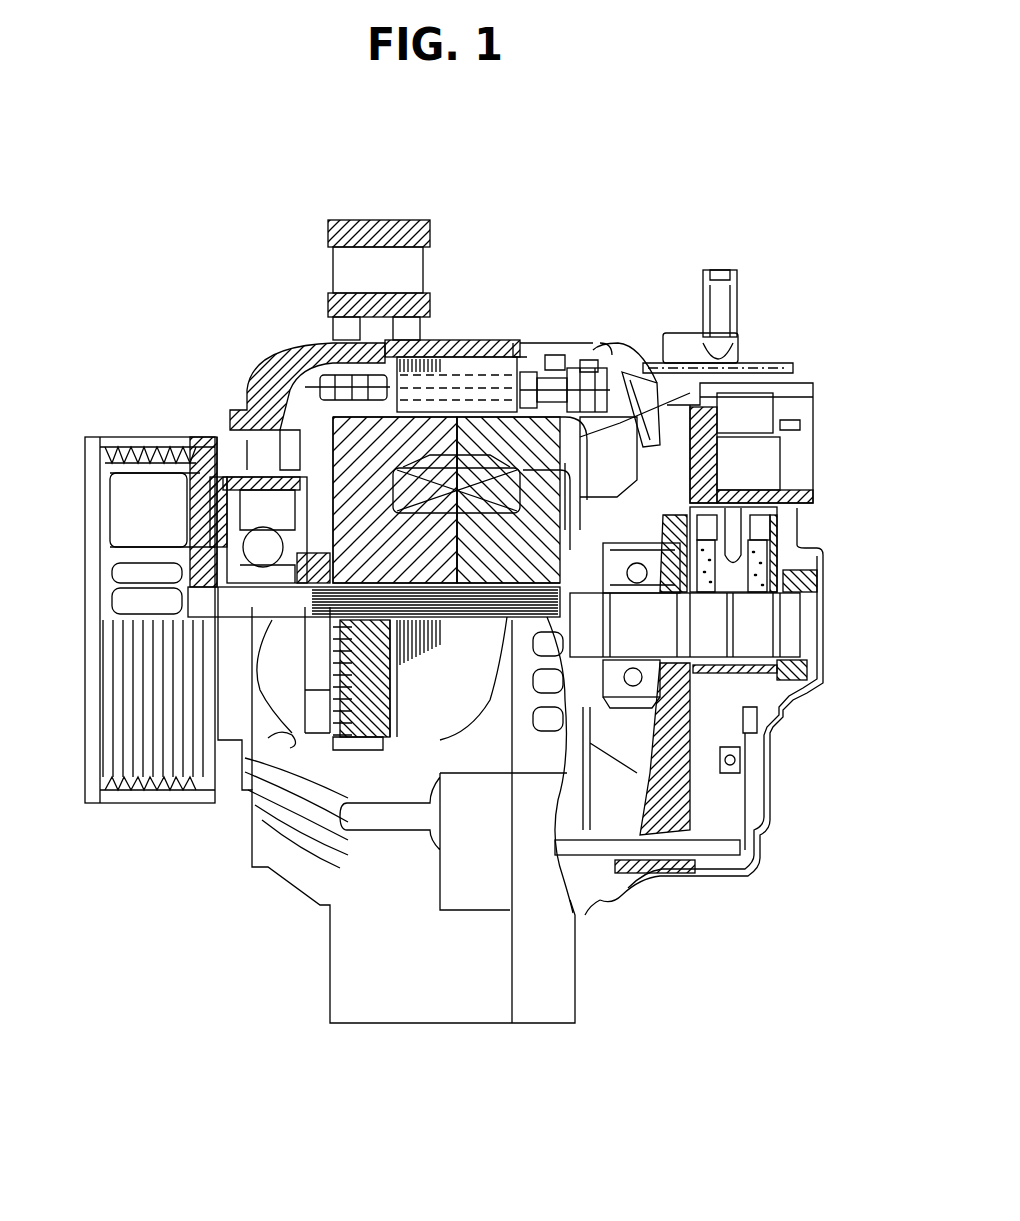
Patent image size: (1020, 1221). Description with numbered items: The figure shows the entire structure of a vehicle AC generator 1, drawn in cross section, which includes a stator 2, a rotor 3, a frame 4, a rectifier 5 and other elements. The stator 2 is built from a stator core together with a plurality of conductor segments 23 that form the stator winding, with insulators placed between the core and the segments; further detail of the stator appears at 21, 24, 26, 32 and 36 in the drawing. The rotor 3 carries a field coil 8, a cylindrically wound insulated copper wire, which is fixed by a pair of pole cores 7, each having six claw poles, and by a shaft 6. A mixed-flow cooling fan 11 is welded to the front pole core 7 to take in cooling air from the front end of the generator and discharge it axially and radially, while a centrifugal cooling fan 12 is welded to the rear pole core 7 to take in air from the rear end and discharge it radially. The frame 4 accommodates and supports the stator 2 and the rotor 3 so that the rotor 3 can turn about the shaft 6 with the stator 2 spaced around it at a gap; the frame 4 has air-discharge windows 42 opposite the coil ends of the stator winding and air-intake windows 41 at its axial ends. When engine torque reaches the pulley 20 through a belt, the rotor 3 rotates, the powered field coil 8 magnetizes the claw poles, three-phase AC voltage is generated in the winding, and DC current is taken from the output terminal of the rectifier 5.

The generator 1 is at (613, 207).
The stator 2 is at (588, 355).
The rotor 3 is at (290, 413).
The frame 4 is at (455, 475).
The rectifier 5 is at (757, 745).
The shaft 6 is at (110, 547).
The pole core 7 is at (717, 430).
The field coil 8 is at (470, 495).
The mixed-flow cooling fan 11 is at (223, 427).
The centrifugal cooling fan 12 is at (620, 473).
The pulley 20 is at (110, 432).
The terminal bolt 21 is at (330, 360).
The conductor segments 23 is at (587, 363).
The frame fastening portion 24 is at (553, 358).
The rear frame flange 26 is at (627, 360).
The stator core 32 is at (467, 343).
The rear end cover 36 is at (603, 900).
The air-intake windows 41 is at (230, 475).
The air-discharge windows 42 is at (290, 360).